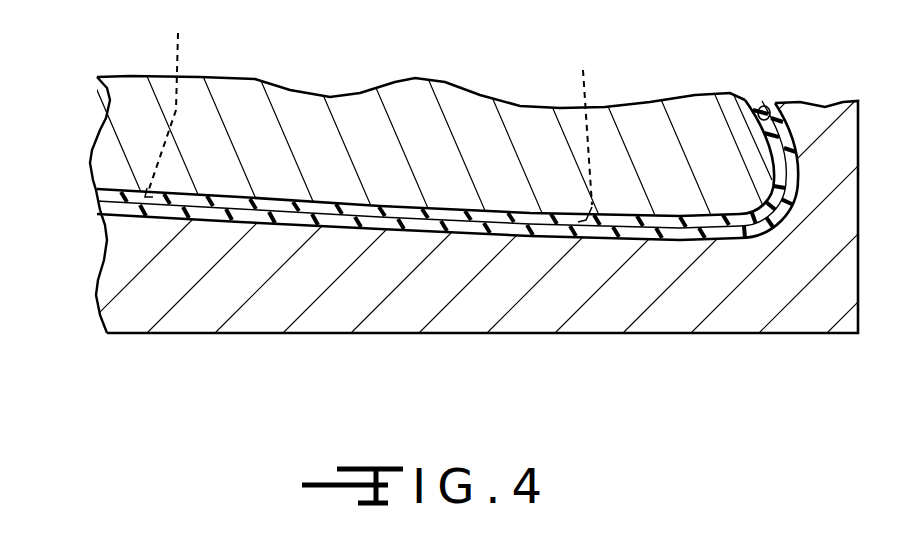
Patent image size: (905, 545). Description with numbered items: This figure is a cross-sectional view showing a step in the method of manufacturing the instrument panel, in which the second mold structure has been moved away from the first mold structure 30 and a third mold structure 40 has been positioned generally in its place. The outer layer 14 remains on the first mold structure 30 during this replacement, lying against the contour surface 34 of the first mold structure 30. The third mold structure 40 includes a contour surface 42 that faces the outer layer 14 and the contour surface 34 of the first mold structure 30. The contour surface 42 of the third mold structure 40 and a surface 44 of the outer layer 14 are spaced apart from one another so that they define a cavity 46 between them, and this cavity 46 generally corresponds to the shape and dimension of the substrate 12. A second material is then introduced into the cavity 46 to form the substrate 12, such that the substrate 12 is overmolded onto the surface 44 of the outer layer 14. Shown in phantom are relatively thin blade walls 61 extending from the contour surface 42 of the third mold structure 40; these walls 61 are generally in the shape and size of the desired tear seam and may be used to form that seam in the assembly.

The substrate 12 is at (411, 184).
The outer layer 14 is at (290, 222).
The first mold structure 30 is at (775, 334).
The contour surface 34 is at (98, 207).
The third mold structure 40 is at (285, 91).
The contour surface 42 is at (98, 192).
The surface 44 is at (754, 101).
The cavity 46 is at (100, 199).
The blade walls 61 is at (371, 114).